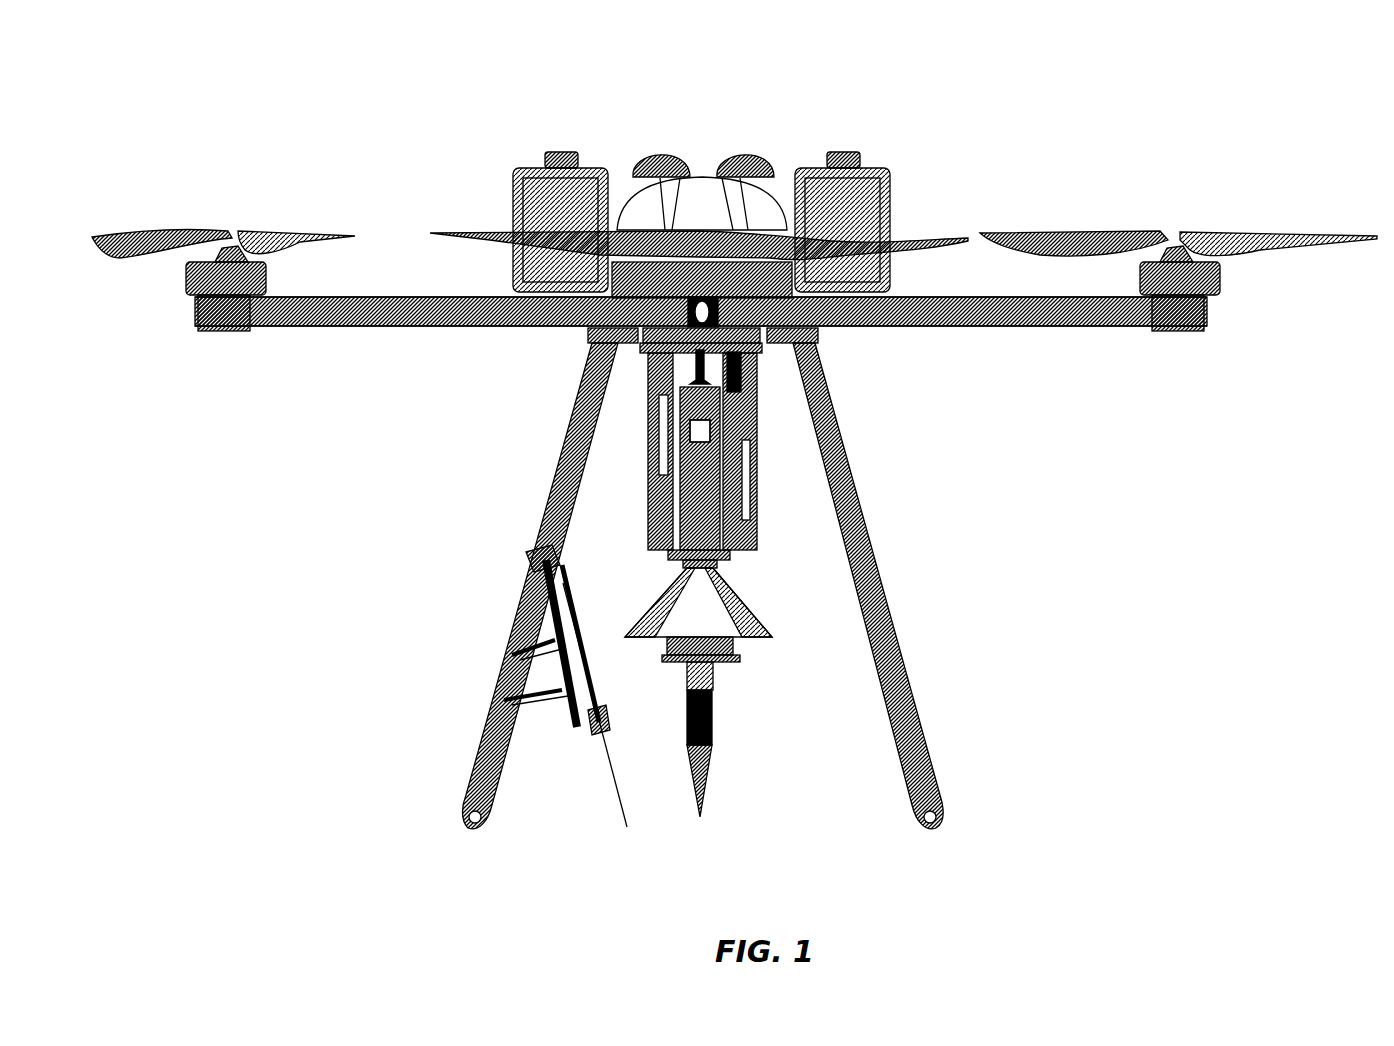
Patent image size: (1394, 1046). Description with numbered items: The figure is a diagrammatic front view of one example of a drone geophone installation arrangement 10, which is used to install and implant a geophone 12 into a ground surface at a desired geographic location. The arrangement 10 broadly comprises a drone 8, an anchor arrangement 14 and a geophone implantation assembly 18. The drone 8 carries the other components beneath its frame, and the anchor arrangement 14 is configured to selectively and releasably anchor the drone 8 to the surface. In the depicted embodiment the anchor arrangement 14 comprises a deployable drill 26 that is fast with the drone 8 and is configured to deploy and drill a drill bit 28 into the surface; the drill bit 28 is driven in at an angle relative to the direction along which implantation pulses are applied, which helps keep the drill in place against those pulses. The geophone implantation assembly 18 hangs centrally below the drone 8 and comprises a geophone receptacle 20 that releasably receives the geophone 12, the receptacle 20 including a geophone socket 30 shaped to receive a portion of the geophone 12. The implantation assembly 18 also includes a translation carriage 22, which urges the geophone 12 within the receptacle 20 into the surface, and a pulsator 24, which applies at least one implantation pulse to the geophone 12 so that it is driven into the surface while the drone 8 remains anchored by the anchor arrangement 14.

The drone 8 is at (988, 303).
The drone geophone installation arrangement 10 is at (1244, 814).
The geophone 12 is at (717, 730).
The anchor arrangement 14 is at (470, 598).
The geophone implantation assembly 18 is at (713, 446).
The geophone receptacle 20 is at (748, 580).
The translation carriage 22 is at (633, 443).
The pulsator 24 is at (700, 480).
The deployable drill 26 is at (523, 627).
The drill bit 28 is at (608, 770).
The geophone socket 30 is at (722, 552).